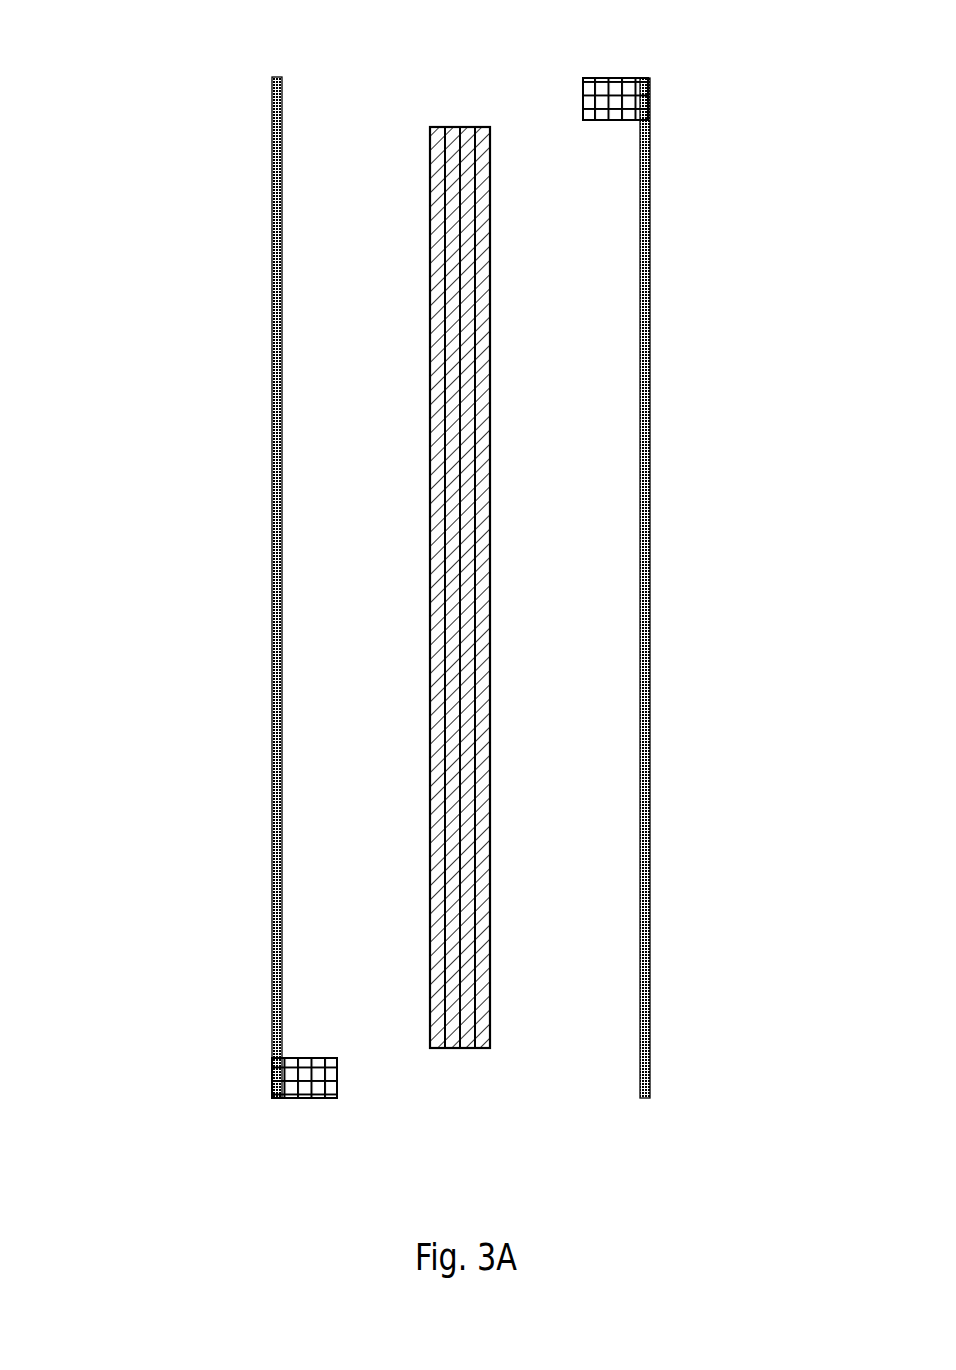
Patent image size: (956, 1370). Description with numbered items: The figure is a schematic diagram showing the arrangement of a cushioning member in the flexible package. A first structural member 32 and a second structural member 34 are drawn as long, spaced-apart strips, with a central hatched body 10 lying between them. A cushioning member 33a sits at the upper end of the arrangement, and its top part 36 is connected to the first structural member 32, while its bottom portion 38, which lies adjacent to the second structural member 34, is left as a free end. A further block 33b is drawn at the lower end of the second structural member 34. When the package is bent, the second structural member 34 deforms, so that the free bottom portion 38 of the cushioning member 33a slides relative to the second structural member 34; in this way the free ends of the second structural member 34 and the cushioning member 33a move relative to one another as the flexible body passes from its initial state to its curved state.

The electrode core / membrane body 10 is at (490, 950).
The first structural member 32 is at (650, 315).
The second structural member 34 is at (272, 496).
The cushioning member 33a is at (603, 78).
The second connection tab 33b is at (277, 1068).
The top part 36 is at (655, 82).
The bottom portion 38 is at (567, 82).